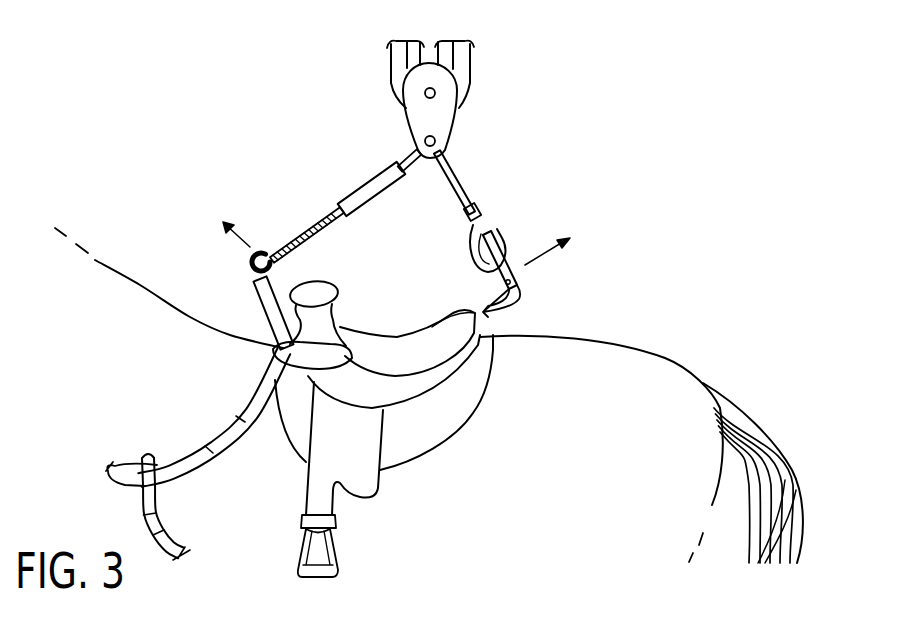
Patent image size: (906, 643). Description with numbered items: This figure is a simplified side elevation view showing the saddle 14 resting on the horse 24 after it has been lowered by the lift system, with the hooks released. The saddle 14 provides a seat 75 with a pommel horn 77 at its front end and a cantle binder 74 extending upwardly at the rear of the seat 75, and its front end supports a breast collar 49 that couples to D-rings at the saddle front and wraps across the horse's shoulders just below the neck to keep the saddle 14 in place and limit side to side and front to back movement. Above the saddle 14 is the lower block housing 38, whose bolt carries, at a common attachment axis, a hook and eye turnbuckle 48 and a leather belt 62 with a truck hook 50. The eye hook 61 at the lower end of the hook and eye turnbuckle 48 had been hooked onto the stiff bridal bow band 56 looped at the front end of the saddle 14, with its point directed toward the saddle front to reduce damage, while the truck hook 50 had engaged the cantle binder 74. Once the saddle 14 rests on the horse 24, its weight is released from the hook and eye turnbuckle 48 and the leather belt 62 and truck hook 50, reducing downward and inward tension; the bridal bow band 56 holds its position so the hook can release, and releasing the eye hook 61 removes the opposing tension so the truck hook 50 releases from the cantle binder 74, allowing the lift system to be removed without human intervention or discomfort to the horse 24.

The saddle 14 is at (467, 428).
The horse 24 is at (647, 360).
The lower block housing 38 is at (438, 118).
The hook and eye turnbuckle 48 is at (294, 212).
The breast collar 49 is at (185, 477).
The truck hook 50 is at (520, 290).
The bridal bow band 56 is at (257, 306).
The eye hook 61 is at (250, 264).
The leather belt 62 is at (468, 190).
The cantle binder 74 is at (477, 316).
The seat 75 is at (405, 340).
The pommel horn 77 is at (318, 284).